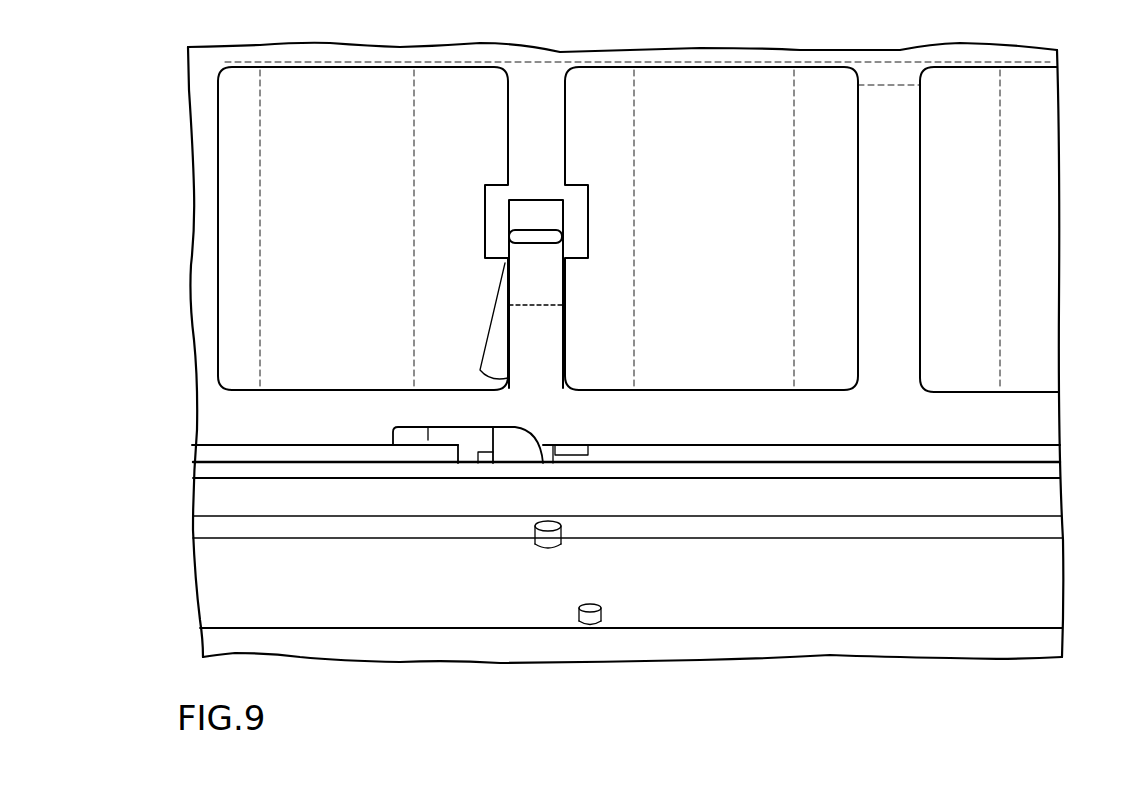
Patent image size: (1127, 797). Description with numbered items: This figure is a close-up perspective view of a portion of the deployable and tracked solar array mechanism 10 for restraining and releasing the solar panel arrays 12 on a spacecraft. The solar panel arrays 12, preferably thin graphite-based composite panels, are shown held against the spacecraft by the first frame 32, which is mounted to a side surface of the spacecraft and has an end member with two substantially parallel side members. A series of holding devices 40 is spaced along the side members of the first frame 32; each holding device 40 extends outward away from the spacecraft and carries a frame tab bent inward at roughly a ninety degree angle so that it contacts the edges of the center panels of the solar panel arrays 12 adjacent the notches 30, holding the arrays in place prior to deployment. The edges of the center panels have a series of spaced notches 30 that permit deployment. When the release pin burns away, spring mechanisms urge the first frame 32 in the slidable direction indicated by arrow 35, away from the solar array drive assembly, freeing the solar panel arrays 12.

The deployable and tracked solar array mechanism 10 is at (1061, 181).
The solar panel arrays 12 is at (899, 60).
The notches 30 is at (445, 443).
The first frame 32 is at (657, 465).
The arrow 35 is at (797, 690).
The holding devices 40 is at (520, 450).